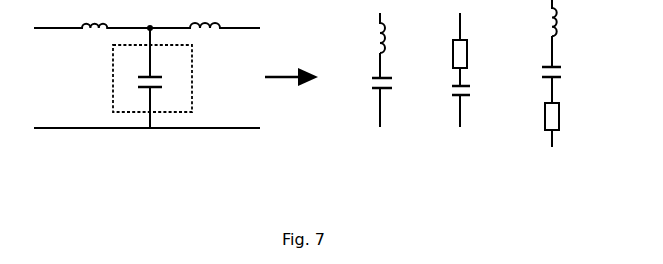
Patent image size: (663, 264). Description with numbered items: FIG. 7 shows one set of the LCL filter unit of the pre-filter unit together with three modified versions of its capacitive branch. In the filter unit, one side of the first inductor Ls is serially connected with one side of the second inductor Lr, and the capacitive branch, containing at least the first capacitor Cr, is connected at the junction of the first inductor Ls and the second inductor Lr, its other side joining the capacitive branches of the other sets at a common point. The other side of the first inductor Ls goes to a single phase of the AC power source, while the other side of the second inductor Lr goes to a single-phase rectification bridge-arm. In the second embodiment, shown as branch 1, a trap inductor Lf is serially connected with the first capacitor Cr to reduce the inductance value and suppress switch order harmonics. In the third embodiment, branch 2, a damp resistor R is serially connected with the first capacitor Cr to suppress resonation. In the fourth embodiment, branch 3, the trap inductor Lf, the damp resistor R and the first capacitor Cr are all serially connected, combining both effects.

The first inductor Ls is at (92, 16).
The second inductor Lr is at (205, 16).
The first capacitor Cr is at (349, 78).
The trap inductor Lf is at (451, 27).
The damp resistor R is at (493, 80).
The second embodiment of the capacitive branch 1 is at (374, 152).
The third embodiment of the capacitive branch 2 is at (451, 152).
The fourth embodiment of the capacitive branch 3 is at (526, 152).